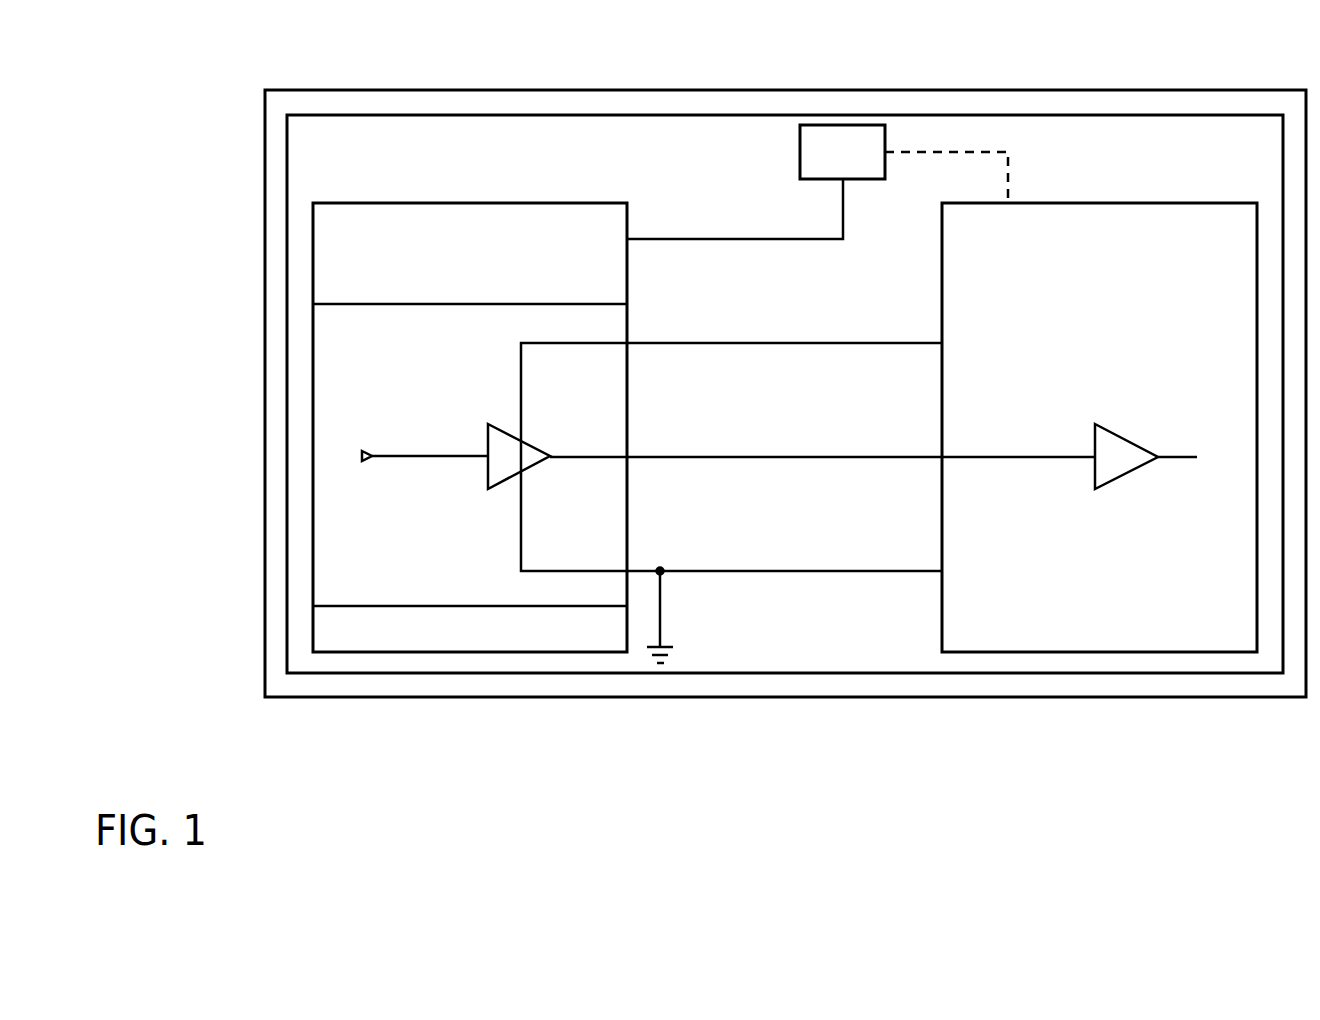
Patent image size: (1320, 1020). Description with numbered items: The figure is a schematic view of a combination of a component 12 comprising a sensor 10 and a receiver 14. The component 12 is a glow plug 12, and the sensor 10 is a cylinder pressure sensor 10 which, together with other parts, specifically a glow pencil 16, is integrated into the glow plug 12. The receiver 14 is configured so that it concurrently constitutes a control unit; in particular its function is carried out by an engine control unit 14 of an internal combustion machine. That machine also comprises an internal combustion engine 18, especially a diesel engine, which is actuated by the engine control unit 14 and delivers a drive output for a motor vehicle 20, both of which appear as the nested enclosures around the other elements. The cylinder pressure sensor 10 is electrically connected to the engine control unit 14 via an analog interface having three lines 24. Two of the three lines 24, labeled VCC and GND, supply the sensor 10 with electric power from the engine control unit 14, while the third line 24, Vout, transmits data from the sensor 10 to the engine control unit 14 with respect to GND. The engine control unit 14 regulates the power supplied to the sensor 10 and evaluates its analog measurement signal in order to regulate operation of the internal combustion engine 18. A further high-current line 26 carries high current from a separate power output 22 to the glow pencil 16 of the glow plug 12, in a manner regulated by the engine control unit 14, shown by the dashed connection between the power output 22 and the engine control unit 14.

The sensor 10 is at (346, 569).
The component 12 is at (309, 675).
The receiver 14 is at (1020, 675).
The glow pencil 16 is at (345, 261).
The internal combustion engine 18 is at (302, 172).
The motor vehicle 20 is at (262, 120).
The separate power output 22 is at (847, 142).
The lines 24 is at (735, 343).
The high-current line 26 is at (717, 239).